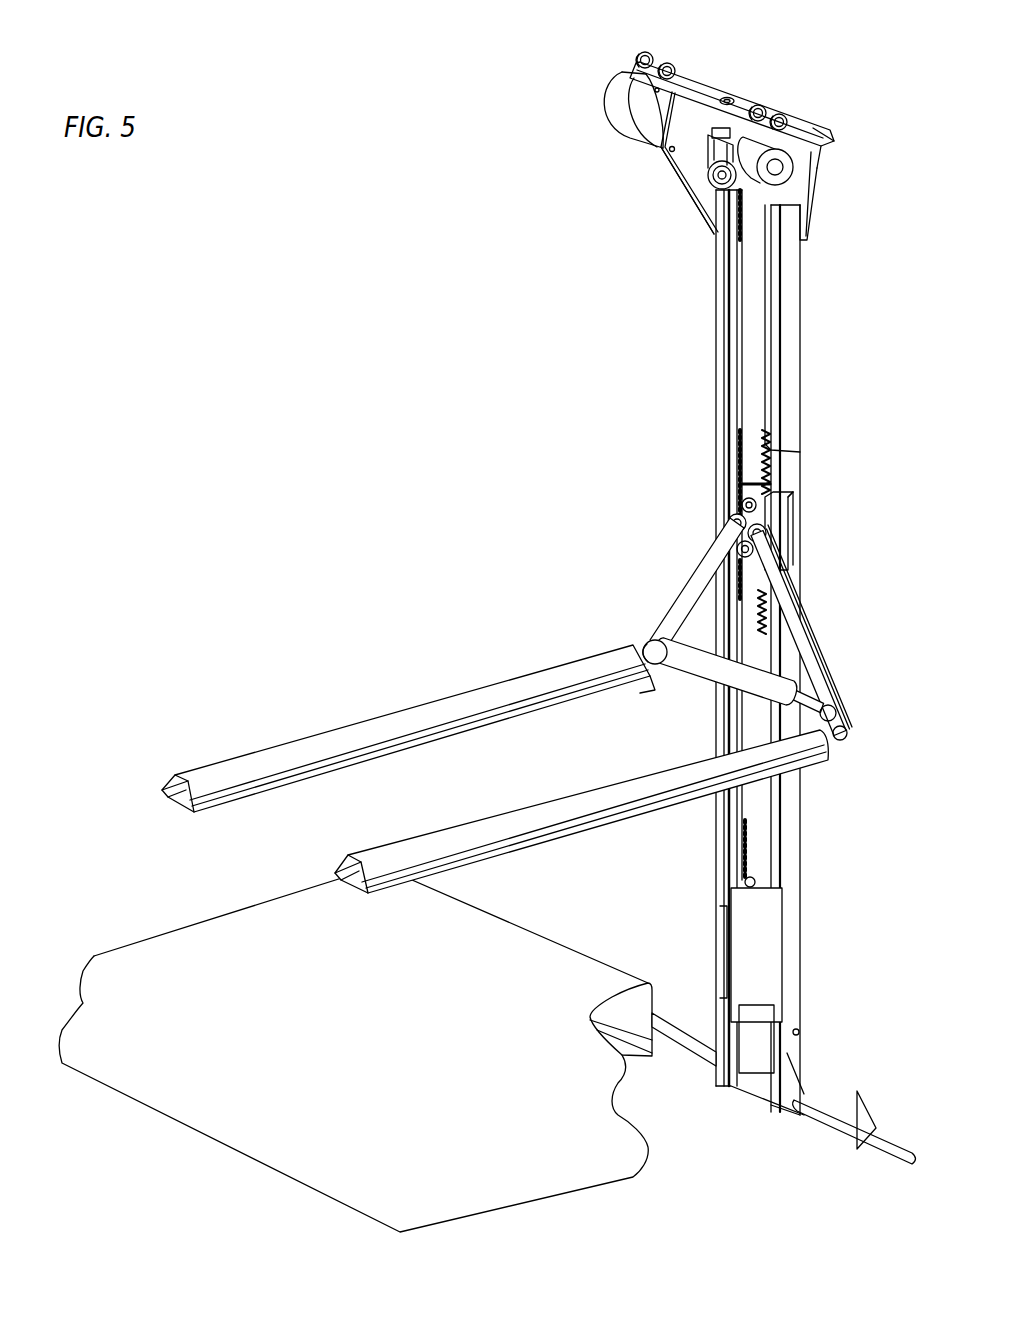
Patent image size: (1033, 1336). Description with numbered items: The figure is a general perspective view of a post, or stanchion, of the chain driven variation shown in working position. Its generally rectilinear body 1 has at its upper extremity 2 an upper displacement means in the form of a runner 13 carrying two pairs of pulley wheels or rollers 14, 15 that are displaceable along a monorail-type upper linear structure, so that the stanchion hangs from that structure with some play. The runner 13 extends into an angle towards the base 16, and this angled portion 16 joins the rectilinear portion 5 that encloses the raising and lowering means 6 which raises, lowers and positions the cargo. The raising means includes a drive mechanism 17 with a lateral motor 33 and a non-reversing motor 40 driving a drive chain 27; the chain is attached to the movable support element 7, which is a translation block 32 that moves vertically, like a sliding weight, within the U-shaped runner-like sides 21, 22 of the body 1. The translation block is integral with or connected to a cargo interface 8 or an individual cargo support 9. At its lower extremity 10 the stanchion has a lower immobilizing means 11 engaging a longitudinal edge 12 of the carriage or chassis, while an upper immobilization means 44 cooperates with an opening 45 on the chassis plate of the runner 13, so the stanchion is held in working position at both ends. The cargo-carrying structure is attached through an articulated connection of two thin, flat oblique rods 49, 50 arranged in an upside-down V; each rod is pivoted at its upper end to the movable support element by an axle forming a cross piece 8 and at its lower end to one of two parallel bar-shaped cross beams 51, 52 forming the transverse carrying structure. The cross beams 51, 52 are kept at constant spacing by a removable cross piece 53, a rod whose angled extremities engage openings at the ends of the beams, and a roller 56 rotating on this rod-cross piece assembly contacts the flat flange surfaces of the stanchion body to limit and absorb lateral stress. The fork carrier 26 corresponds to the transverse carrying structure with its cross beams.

The rectilinear body 1 is at (836, 374).
The upper extremity 2 is at (779, 69).
The rectilinear portion 5 is at (758, 413).
The raising and lowering means 6 is at (675, 470).
The movable support element 7 is at (812, 556).
The cargo interface 8 is at (735, 522).
The individual cargo support 9 is at (838, 646).
The lower extremity 10 is at (824, 979).
The lower immobilizing means 11 is at (757, 1038).
The longitudinal edge 12 is at (843, 1120).
The runner 13 is at (705, 85).
The pair of rollers 14 is at (802, 103).
The pair of rollers 15 is at (653, 35).
The angled portion 16 is at (829, 207).
The drive mechanism 17 is at (667, 242).
The runner-like side 21 is at (792, 860).
The runner-like side 22 is at (717, 380).
The fork carrier 26 is at (293, 827).
The drive chain 27 is at (772, 470).
The translation block 32 is at (760, 532).
The lateral motor 33 is at (613, 107).
The non-reversing motor 40 is at (682, 169).
The upper immobilization means 44 is at (818, 1057).
The opening 45 is at (729, 97).
The oblique rod 49 is at (818, 690).
The oblique rod 50 is at (692, 598).
The cross beam 51 is at (587, 849).
The cross beam 52 is at (457, 676).
The removable cross piece 53 is at (688, 683).
The roller 56 is at (727, 662).